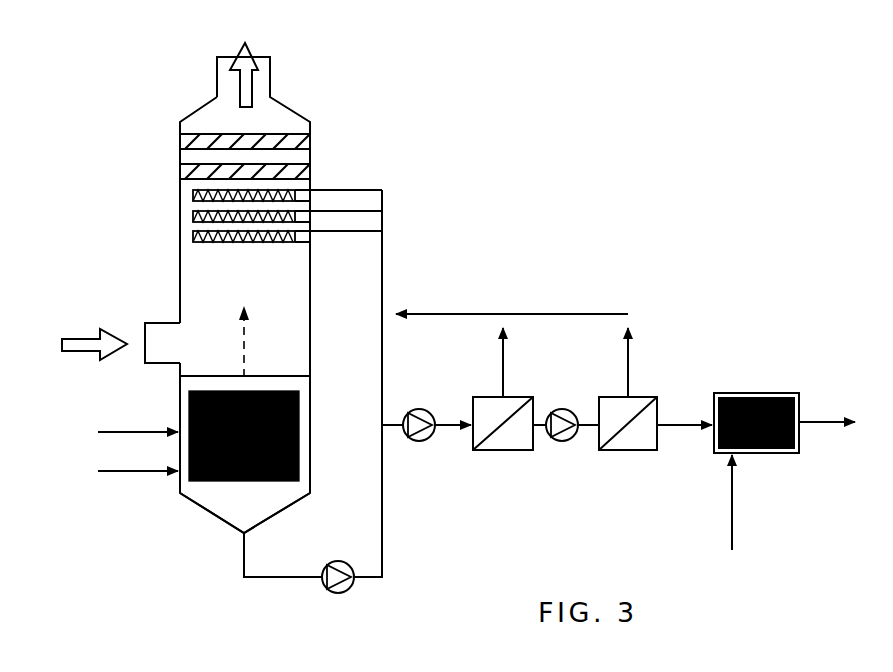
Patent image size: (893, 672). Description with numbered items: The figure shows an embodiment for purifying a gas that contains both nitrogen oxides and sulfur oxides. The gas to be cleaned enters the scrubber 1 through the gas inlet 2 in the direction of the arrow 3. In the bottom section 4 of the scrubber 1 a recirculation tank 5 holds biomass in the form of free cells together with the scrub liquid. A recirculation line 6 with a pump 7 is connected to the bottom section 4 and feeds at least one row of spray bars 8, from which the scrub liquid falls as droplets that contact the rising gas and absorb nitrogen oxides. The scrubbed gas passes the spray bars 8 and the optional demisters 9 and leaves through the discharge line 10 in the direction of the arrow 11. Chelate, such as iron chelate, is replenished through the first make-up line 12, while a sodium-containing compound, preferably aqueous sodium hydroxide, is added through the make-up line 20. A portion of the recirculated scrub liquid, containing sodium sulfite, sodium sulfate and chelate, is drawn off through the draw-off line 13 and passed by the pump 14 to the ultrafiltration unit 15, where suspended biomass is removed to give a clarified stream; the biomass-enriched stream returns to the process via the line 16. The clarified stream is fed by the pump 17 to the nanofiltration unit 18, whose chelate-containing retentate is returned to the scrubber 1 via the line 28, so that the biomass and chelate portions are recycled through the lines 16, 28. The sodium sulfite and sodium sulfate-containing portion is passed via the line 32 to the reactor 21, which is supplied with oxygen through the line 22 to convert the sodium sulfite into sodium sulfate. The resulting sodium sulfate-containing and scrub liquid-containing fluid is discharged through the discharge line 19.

The scrubber 1 is at (282, 103).
The gas inlet 2 is at (167, 323).
The arrow 3 is at (82, 331).
The bottom section 4 is at (277, 516).
The recirculation tank 5 is at (299, 402).
The recirculation line 6 is at (243, 558).
The pump 7 is at (343, 593).
The spray bars 8 is at (193, 238).
The demisters 9 is at (295, 136).
The discharge line 10 is at (270, 58).
The arrow 11 is at (238, 57).
The first make-up line 12 is at (104, 469).
The draw-off line 13 is at (386, 425).
The pump 14 is at (416, 441).
The ultrafiltration unit 15 is at (500, 450).
The line 16 is at (508, 372).
The pump 17 is at (560, 441).
The nanofiltration unit 18 is at (625, 450).
The discharge line 19 is at (818, 415).
The make-up line 20 is at (104, 430).
The reactor 21 is at (760, 393).
The line 22 is at (733, 518).
The line 28 is at (633, 340).
The line 32 is at (681, 425).